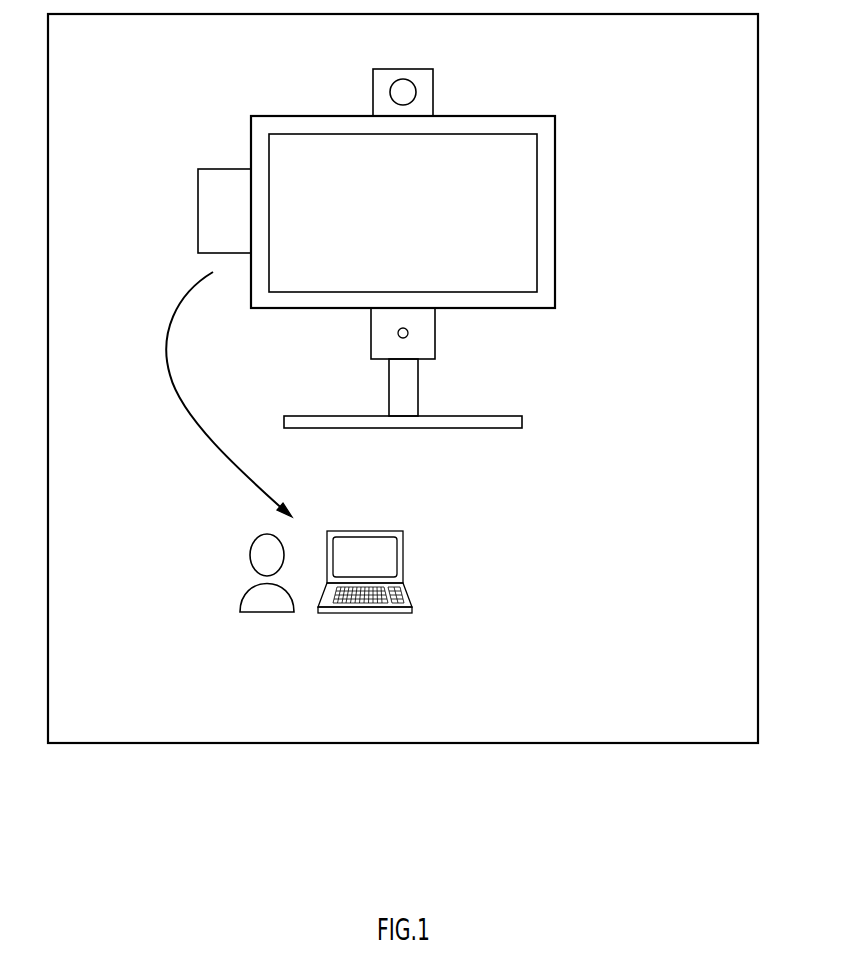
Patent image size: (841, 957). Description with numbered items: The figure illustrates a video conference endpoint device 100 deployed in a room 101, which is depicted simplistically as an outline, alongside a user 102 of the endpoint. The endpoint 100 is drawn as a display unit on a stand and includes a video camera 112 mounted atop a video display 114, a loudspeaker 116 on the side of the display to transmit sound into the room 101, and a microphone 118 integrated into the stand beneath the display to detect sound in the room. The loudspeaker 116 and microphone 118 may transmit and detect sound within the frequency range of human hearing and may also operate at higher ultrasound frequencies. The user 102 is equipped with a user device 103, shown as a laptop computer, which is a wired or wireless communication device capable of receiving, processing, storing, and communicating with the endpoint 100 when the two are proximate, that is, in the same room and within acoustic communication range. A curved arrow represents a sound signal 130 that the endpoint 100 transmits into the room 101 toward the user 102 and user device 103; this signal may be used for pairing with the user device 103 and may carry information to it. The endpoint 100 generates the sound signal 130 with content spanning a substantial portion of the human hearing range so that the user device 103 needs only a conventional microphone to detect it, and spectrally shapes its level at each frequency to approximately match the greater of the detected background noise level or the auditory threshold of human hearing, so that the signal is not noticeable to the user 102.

The video conference endpoint device 100 is at (200, 125).
The room 101 is at (680, 101).
The user 102 is at (267, 613).
The user device 103 is at (382, 613).
The video camera 112 is at (433, 93).
The video display 114 is at (555, 163).
The loudspeaker 116 is at (198, 212).
The microphone 118 is at (435, 332).
The sound signal 130 is at (168, 370).